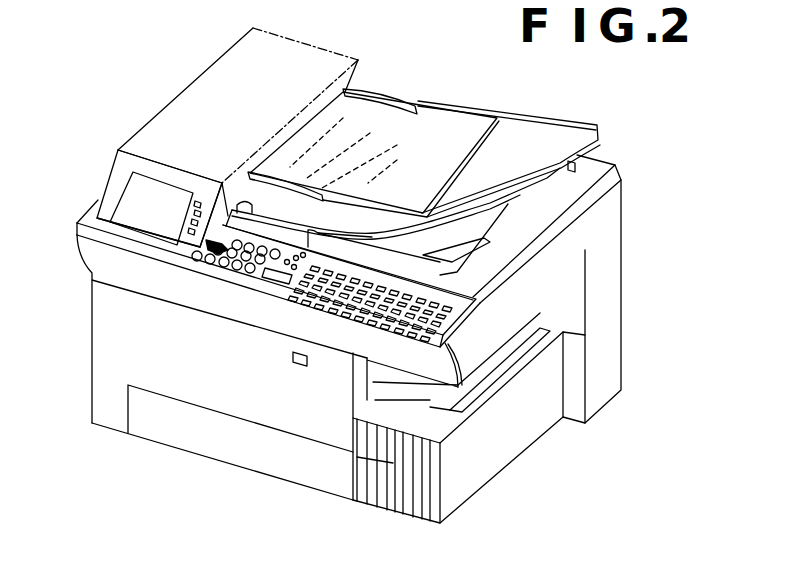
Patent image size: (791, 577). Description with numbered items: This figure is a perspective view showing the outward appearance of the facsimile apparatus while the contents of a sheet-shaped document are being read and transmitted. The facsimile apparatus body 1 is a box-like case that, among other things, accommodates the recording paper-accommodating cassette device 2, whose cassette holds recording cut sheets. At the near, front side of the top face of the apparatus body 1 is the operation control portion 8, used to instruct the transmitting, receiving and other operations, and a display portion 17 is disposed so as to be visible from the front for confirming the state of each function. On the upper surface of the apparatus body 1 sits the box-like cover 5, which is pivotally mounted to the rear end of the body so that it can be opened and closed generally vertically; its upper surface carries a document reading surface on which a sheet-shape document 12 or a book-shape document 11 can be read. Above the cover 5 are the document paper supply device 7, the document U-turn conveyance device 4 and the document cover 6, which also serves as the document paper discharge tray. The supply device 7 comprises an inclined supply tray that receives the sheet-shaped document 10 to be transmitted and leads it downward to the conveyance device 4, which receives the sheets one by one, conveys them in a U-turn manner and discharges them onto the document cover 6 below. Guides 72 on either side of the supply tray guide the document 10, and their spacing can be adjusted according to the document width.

The facsimile apparatus body 1 is at (99, 424).
The recording paper-accommodating cassette device 2 is at (225, 448).
The document U-turn conveyance device 4 is at (207, 97).
The cover 5 is at (617, 197).
The document cover 6 is at (596, 168).
The document paper supply device 7 is at (537, 127).
The operation control portion 8 is at (245, 273).
The sheet-shaped document 10 is at (433, 130).
The book-shape document 11 is at (100, 367).
The sheet-shape document 12 is at (513, 202).
The display portion 17 is at (127, 197).
The guide 72 is at (385, 88).